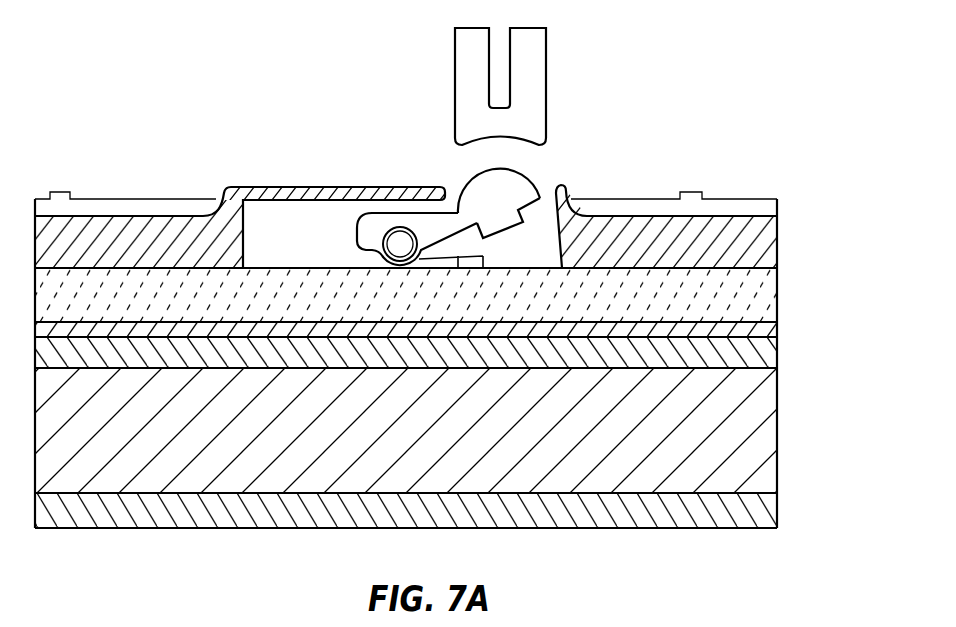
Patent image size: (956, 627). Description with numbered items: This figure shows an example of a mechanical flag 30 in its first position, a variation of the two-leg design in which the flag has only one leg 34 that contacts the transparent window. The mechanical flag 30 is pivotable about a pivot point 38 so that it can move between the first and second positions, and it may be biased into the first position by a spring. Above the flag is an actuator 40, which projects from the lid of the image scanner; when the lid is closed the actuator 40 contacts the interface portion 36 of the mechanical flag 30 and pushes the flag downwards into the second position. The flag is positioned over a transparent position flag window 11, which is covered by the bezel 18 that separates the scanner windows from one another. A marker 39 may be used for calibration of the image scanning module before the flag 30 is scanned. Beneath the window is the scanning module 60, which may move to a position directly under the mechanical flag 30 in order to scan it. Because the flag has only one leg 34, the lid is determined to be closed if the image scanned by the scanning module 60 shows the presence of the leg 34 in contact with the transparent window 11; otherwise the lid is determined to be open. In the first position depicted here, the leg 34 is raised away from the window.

The position flag window 11 is at (772, 297).
The bezel 18 is at (772, 247).
The mechanical flag 30 is at (411, 223).
The leg 34 is at (500, 228).
The interface portion 36 is at (473, 173).
The pivot point 38 is at (400, 250).
The marker 39 is at (472, 262).
The actuator 40 is at (542, 48).
The scanning module 60 is at (772, 436).